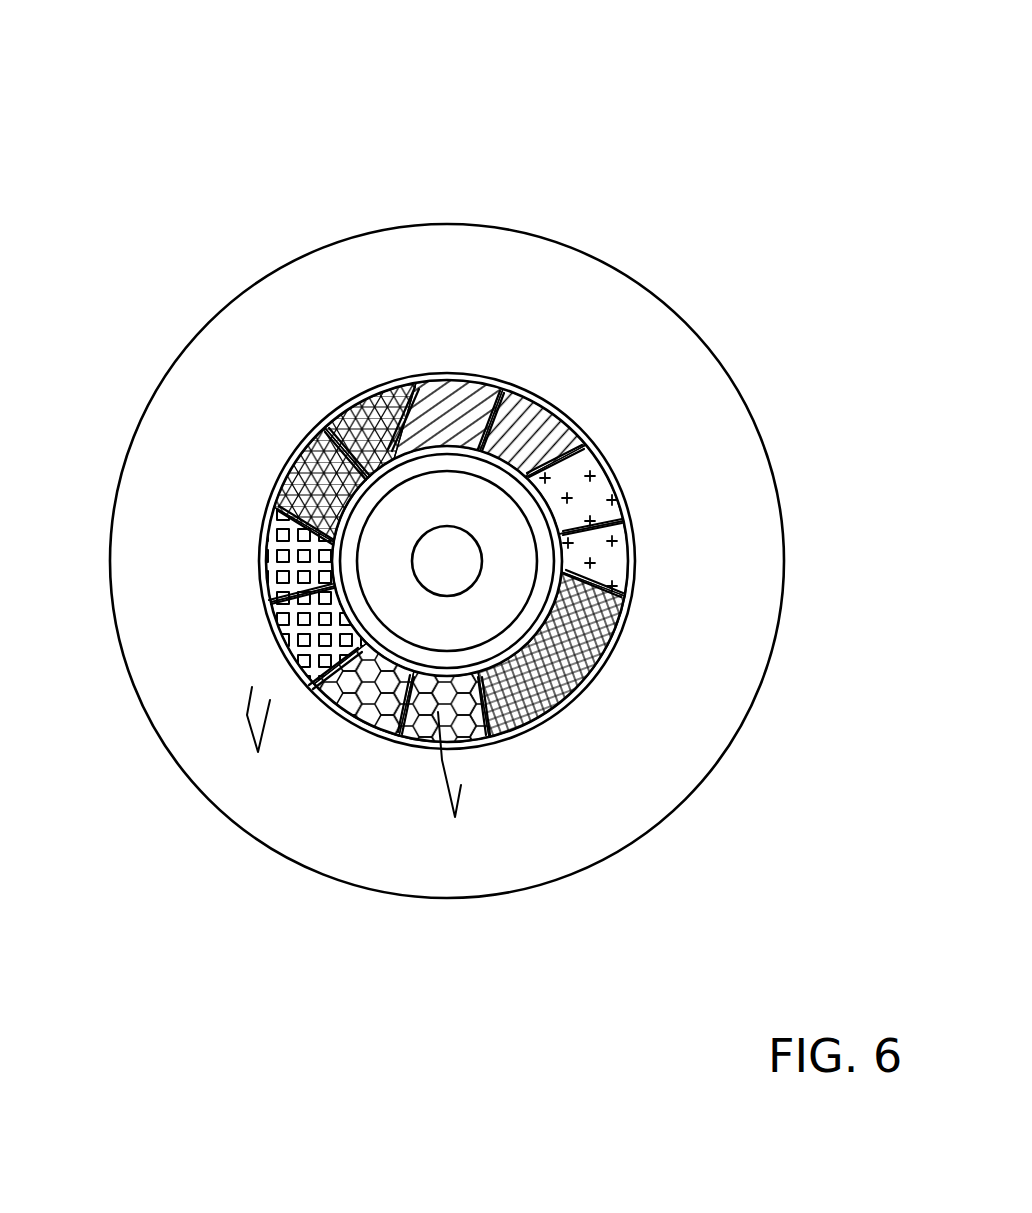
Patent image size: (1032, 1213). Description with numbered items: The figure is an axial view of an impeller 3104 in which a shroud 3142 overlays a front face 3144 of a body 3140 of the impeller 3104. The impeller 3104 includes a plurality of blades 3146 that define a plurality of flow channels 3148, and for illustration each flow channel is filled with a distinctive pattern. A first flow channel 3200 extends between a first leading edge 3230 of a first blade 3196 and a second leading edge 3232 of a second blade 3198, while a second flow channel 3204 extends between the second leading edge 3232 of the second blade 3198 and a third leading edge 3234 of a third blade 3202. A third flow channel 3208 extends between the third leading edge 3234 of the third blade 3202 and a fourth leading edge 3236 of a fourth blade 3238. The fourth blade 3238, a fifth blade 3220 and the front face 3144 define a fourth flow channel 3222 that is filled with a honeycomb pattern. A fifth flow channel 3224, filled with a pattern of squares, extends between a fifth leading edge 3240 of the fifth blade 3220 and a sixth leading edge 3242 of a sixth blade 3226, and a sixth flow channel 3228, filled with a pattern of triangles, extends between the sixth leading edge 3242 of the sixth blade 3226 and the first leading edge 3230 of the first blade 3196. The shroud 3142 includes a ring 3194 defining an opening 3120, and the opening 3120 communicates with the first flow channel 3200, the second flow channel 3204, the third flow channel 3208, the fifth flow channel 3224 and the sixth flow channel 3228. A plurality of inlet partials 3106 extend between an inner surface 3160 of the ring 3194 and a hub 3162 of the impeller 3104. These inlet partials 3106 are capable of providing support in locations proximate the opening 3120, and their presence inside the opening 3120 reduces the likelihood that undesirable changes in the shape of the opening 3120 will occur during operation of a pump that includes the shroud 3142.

The impeller 3104 is at (818, 911).
The inlet partials 3106 is at (477, 407).
The opening 3120 is at (320, 655).
The body 3140 is at (585, 448).
The shroud 3142 is at (577, 838).
The front face 3144 is at (590, 500).
The blades 3146 is at (287, 533).
The flow channels 3148 is at (270, 623).
The inner surface 3160 is at (373, 707).
The hub 3162 is at (618, 590).
The ring 3194 is at (270, 578).
The first blade 3196 is at (420, 407).
The second blade 3198 is at (560, 440).
The first flow channel 3200 is at (530, 407).
The third blade 3202 is at (560, 622).
The second flow channel 3204 is at (610, 562).
The third flow channel 3208 is at (525, 688).
The fifth blade 3220 is at (365, 660).
The fourth flow channel 3222 is at (450, 735).
The fifth flow channel 3224 is at (283, 552).
The sixth blade 3226 is at (295, 467).
The sixth flow channel 3228 is at (383, 407).
The first leading edge 3230 is at (415, 235).
The second leading edge 3232 is at (601, 308).
The third leading edge 3234 is at (707, 695).
The fourth leading edge 3236 is at (485, 738).
The fourth blade 3238 is at (619, 824).
The fifth leading edge 3240 is at (324, 861).
The sixth leading edge 3242 is at (260, 397).